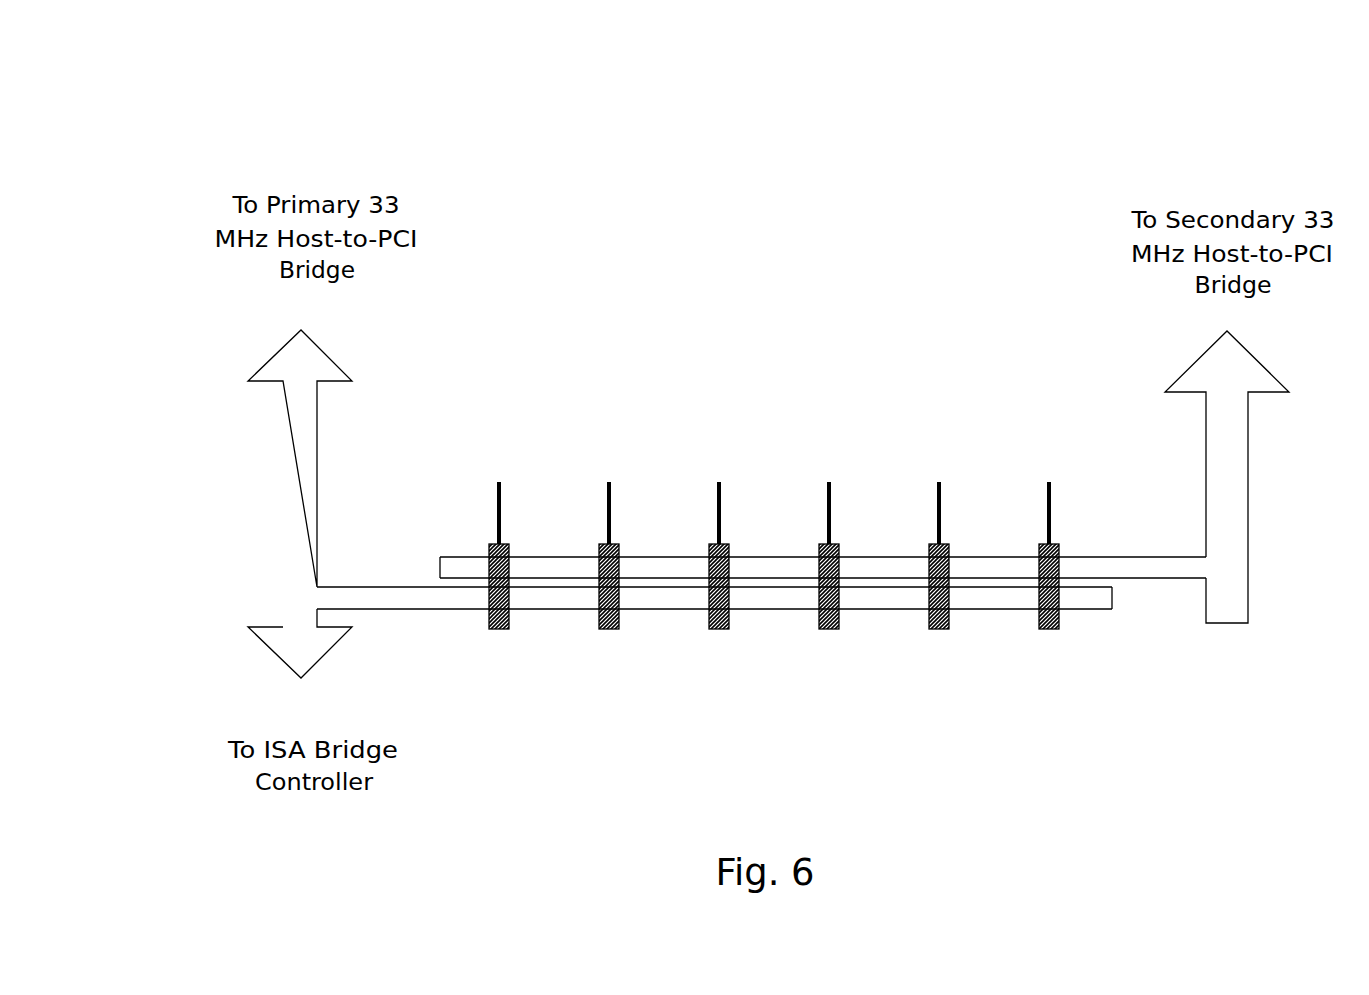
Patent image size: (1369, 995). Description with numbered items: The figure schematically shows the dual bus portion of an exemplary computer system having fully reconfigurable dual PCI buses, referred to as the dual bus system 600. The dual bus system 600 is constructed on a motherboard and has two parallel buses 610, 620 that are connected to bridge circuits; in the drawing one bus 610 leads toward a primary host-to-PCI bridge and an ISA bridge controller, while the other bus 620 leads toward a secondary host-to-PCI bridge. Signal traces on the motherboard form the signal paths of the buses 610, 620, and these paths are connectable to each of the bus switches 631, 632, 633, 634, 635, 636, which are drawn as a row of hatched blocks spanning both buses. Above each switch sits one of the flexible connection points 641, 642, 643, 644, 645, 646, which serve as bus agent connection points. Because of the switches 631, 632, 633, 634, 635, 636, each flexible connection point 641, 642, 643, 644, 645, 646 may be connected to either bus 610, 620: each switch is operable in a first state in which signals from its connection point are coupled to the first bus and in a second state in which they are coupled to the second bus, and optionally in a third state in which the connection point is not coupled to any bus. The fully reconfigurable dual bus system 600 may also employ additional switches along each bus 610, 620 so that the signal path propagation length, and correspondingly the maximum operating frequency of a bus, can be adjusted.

The dual bus system 600 is at (777, 125).
The bus 610 is at (283, 442).
The bus 620 is at (1248, 442).
The bus switch 631 is at (511, 627).
The bus switch 632 is at (620, 627).
The bus switch 633 is at (724, 627).
The bus switch 634 is at (835, 627).
The bus switch 635 is at (947, 627).
The bus switch 636 is at (1063, 627).
The flexible connection point 641 is at (503, 505).
The flexible connection point 642 is at (613, 505).
The flexible connection point 643 is at (723, 505).
The flexible connection point 644 is at (833, 505).
The flexible connection point 645 is at (943, 505).
The flexible connection point 646 is at (1053, 505).